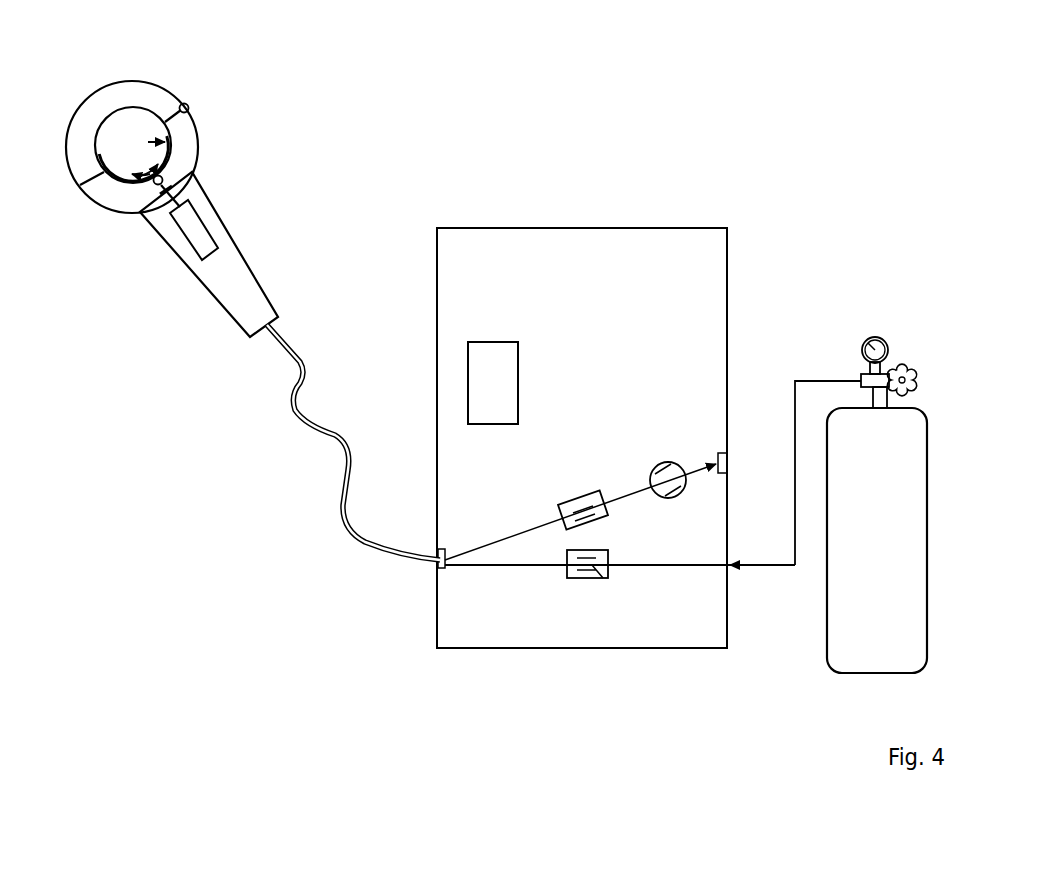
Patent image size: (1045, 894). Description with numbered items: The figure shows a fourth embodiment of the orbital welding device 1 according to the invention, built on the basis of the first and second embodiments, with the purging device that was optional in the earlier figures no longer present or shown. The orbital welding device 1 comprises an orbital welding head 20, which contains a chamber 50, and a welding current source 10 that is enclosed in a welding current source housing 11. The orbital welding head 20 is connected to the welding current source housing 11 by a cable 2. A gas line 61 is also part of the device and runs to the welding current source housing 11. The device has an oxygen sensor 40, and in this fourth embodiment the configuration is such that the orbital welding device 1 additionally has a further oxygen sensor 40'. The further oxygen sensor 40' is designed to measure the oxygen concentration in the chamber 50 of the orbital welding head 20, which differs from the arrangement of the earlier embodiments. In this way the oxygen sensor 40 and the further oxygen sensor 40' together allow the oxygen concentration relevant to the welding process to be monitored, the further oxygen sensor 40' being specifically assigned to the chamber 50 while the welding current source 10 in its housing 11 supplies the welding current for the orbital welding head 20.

The orbital welding device 1 is at (713, 146).
The cable 2 is at (287, 408).
The welding current source 10 is at (495, 340).
The welding current source housing 11 is at (492, 227).
The orbital welding head 20 is at (134, 260).
The oxygen sensor 40 is at (584, 592).
The further oxygen sensor 40' is at (583, 489).
The chamber 50 is at (117, 130).
The gas line 61 is at (603, 578).